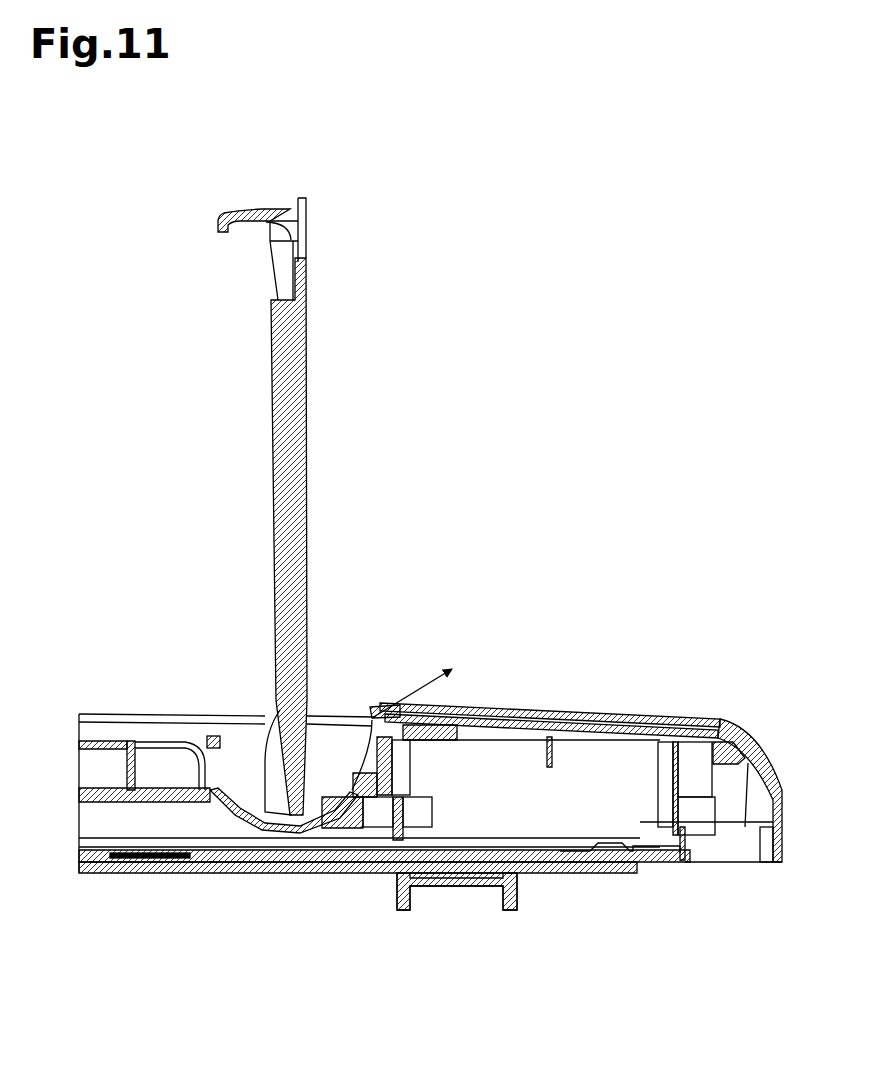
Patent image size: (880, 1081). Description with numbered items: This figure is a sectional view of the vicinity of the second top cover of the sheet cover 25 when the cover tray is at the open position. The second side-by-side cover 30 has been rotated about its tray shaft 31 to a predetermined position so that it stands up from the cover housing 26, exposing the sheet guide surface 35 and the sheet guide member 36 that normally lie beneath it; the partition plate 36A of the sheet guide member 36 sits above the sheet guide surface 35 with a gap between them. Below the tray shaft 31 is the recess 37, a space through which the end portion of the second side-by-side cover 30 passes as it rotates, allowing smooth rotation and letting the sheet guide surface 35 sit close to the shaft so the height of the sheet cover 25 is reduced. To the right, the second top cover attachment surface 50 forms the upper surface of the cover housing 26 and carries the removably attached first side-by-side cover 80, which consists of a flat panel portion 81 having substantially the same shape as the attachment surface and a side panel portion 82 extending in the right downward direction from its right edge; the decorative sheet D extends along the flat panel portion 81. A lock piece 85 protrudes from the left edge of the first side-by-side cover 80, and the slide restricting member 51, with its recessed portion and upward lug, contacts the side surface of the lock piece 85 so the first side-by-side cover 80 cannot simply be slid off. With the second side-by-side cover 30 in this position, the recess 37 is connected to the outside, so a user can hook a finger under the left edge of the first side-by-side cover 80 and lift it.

The second side-by-side cover 30 is at (285, 356).
The tray shaft 31 is at (265, 748).
The sheet guide surface 35 is at (110, 786).
The sheet guide member 36 is at (155, 758).
The partition plate 36A is at (97, 741).
The recess 37 is at (325, 774).
The lock piece 85 is at (372, 710).
The decorative sheet D is at (506, 716).
The first side-by-side cover 80 is at (572, 710).
The flat panel portion 81 is at (637, 724).
The side panel portion 82 is at (735, 742).
The sheet cover 25 is at (778, 776).
The cover housing 26 is at (785, 834).
The second top cover attachment surface 50 is at (600, 744).
The slide restricting member 51 is at (416, 748).